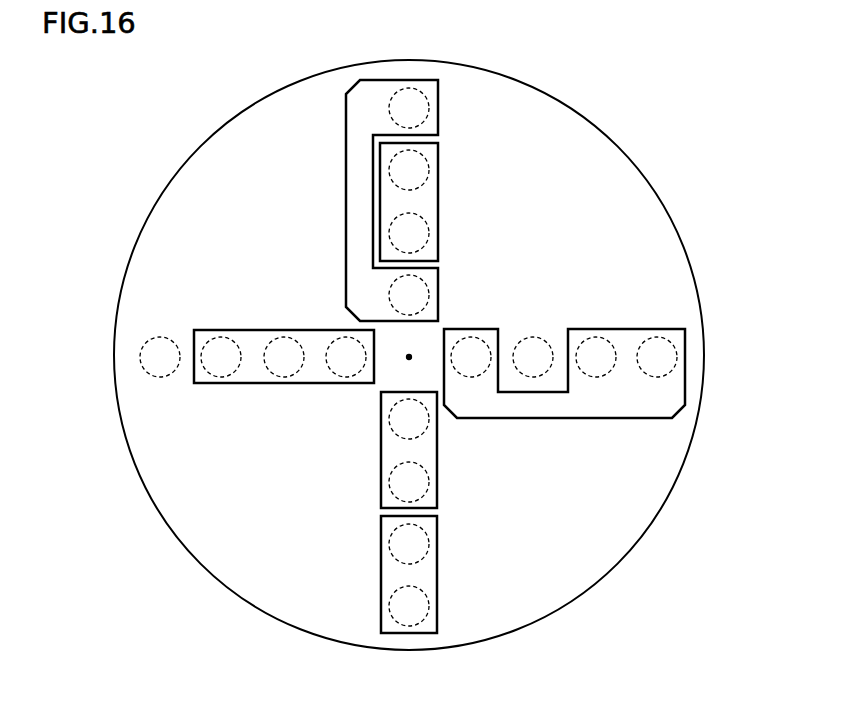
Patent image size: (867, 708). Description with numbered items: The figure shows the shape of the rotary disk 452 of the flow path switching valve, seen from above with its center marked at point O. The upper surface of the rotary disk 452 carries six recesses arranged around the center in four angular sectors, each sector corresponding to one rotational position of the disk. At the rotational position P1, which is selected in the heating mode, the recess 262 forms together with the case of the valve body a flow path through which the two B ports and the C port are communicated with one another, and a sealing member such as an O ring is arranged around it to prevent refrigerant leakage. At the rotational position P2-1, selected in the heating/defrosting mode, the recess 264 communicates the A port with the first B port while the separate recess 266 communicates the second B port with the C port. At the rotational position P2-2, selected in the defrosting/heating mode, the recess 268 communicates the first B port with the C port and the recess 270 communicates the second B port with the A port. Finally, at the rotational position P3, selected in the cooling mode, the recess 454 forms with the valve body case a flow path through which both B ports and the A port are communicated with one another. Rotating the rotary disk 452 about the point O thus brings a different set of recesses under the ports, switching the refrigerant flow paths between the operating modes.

The recess 262 is at (255, 333).
The recess 264 is at (350, 198).
The recess 266 is at (438, 203).
The recess 268 is at (383, 437).
The recess 270 is at (437, 562).
The rotary disk 452 is at (682, 233).
The recess 454 is at (600, 418).
The center point O is at (410, 355).
The rotational position P1 is at (185, 318).
The rotational position P2-1 is at (451, 105).
The rotational position P2-2 is at (369, 607).
The rotational position P3 is at (660, 313).